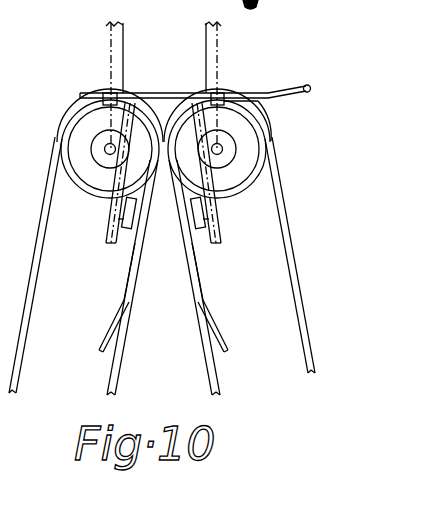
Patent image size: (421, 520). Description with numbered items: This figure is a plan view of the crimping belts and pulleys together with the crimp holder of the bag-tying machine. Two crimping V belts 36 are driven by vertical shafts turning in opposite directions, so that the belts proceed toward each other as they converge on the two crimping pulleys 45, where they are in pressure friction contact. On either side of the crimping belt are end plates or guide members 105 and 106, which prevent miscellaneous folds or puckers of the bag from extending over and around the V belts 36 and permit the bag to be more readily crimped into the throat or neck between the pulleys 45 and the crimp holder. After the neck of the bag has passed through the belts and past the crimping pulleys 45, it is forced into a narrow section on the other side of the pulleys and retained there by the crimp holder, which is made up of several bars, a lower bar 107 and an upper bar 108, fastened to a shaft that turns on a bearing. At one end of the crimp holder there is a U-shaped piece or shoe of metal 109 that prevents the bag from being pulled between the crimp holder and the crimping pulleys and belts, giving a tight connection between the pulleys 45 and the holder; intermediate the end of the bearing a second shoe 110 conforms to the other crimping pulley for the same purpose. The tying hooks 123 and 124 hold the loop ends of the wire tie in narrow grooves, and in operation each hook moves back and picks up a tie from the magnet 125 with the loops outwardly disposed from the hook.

The crimping V belts 36 is at (287, 233).
The crimping pulleys 45 is at (262, 152).
The end plate or guide member 105 is at (218, 303).
The end plate or guide member 106 is at (116, 299).
The lower bar 107 is at (84, 93).
The upper bar 108 is at (278, 92).
The U-shaped shoe 109 is at (250, 104).
The second shoe 110 is at (118, 93).
The tying hook 123 is at (208, 216).
The tying hook 124 is at (118, 219).
The magnet 125 is at (127, 224).